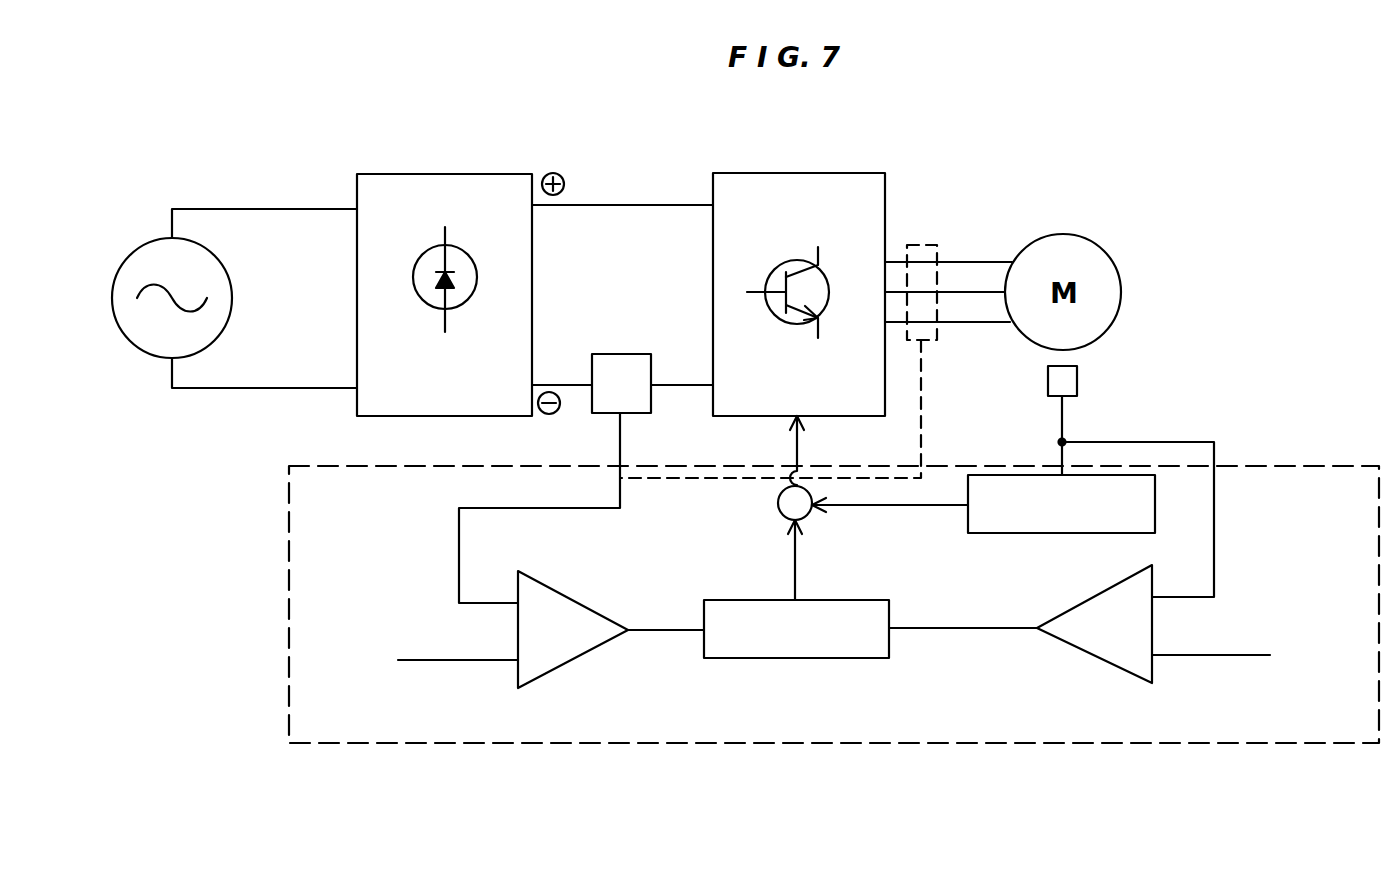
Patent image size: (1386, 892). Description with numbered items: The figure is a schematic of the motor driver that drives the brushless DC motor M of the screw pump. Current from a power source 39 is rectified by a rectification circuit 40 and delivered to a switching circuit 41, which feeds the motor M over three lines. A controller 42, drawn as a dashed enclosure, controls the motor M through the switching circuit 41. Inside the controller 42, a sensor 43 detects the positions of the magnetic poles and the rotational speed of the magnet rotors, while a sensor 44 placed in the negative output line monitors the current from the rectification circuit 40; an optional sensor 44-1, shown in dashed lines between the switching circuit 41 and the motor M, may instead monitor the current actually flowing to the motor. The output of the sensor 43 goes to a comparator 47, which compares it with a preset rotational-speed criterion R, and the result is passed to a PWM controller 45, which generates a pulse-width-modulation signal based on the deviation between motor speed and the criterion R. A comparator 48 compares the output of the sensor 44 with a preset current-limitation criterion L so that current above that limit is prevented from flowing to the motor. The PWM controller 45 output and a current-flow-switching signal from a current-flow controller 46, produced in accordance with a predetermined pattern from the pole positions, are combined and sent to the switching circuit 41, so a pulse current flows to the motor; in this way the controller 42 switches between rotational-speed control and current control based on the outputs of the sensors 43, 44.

The power source 39 is at (138, 247).
The rectification circuit 40 is at (367, 192).
The switching circuit 41 is at (882, 193).
The controller 42 is at (817, 743).
The sensor 43 is at (1048, 380).
The sensor 44 is at (645, 397).
The sensor 44-1 is at (937, 245).
The PWM controller 45 is at (737, 658).
The current-flow controller 46 is at (968, 475).
The comparator 47 is at (1133, 680).
The comparator 48 is at (527, 687).